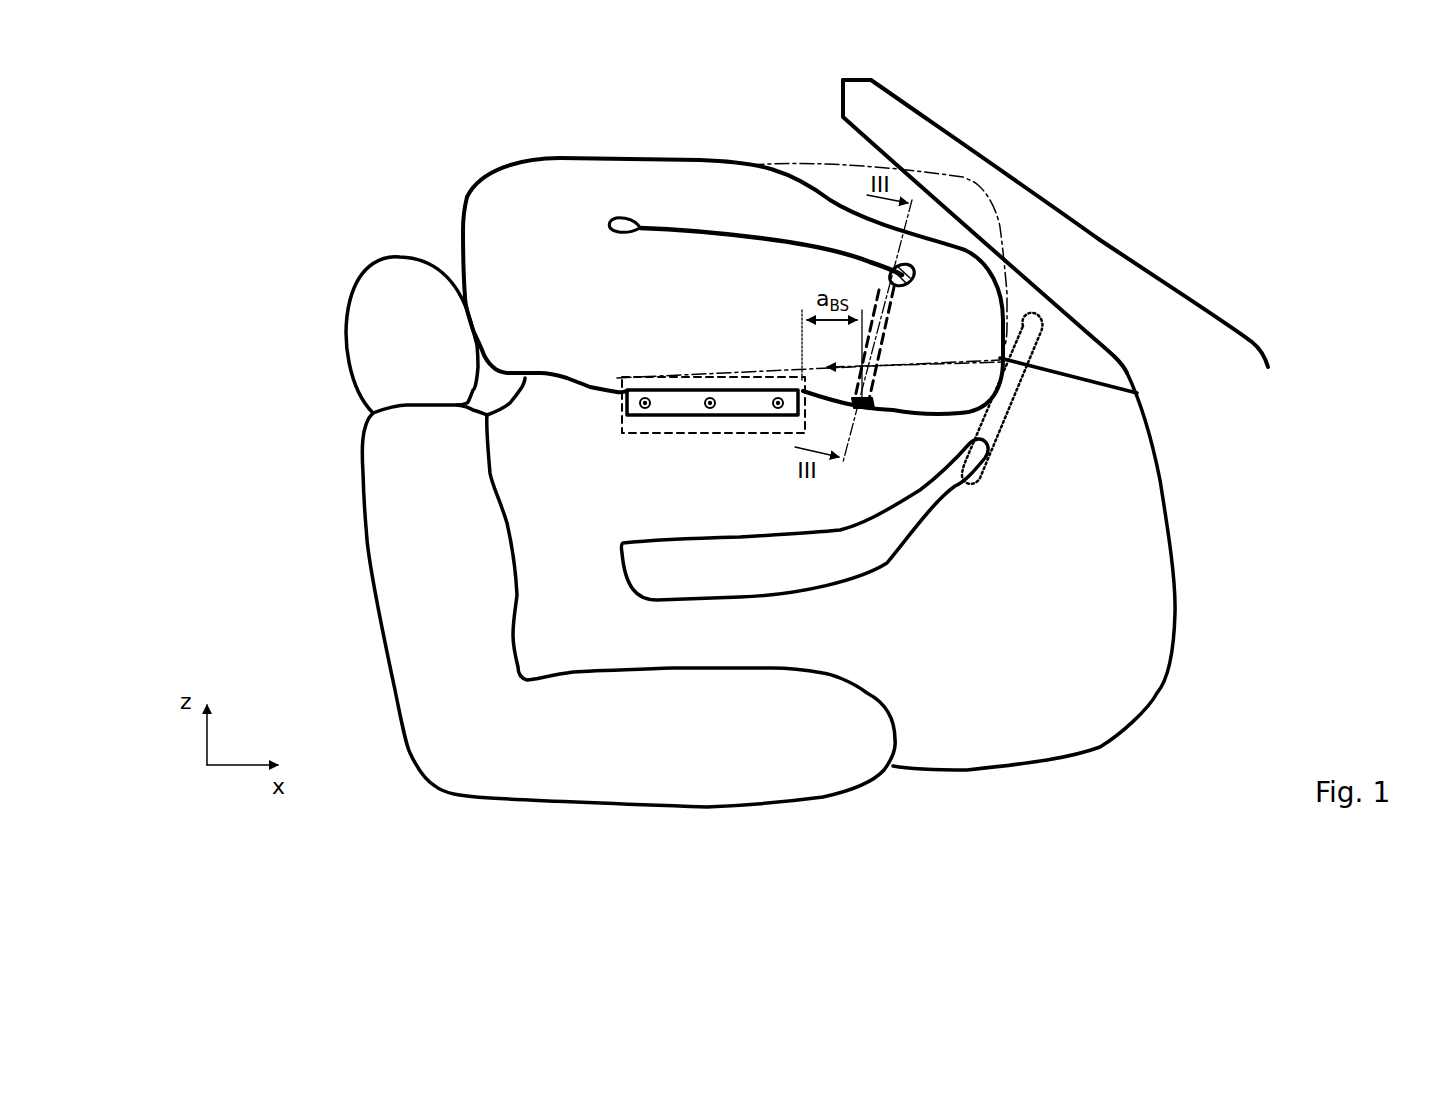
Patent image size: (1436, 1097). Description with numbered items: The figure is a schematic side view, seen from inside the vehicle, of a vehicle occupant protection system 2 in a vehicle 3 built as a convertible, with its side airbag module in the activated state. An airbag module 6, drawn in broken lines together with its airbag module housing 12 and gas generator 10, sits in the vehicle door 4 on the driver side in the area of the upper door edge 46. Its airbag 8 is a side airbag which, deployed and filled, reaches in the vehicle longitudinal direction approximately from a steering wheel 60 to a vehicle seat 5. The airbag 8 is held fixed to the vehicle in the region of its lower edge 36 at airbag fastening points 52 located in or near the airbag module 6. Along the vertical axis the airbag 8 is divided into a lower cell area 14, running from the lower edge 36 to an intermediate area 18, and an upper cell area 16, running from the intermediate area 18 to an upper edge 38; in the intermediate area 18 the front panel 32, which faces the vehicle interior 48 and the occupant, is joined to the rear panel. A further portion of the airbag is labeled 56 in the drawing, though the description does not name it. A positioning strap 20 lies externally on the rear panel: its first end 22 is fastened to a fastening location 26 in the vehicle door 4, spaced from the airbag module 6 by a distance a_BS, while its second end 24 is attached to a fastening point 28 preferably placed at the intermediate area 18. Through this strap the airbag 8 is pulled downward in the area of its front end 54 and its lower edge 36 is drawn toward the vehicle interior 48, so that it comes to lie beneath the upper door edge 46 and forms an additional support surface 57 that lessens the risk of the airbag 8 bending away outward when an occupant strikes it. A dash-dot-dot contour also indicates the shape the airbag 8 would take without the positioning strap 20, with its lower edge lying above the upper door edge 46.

The vehicle occupant protection system 2 is at (377, 133).
The vehicle 3 is at (1186, 355).
The vehicle door 4 is at (1120, 573).
The vehicle seat 5 is at (428, 630).
The airbag module 6 is at (622, 420).
The airbag 8 is at (530, 155).
The gas generator 10 is at (630, 382).
The airbag module housing 12 is at (641, 435).
The lower cell area 14 is at (693, 310).
The upper cell area 16 is at (690, 200).
The intermediate area 18 is at (640, 226).
The positioning strap 20 is at (883, 347).
The first end 22 is at (878, 413).
The second end 24 is at (890, 268).
The fastening location 26 is at (860, 413).
The fastening point 28 is at (915, 272).
The front panel 32 is at (620, 268).
The lower edge 36 is at (593, 387).
The upper edge 38 is at (745, 163).
The upper door edge 46 is at (935, 372).
The vehicle interior 48 is at (1000, 715).
The airbag fastening points 52 is at (776, 409).
The front end 54 is at (953, 327).
The airbag chamber 56 is at (490, 225).
The additional support surface 57 is at (890, 382).
The steering wheel 60 is at (1008, 388).